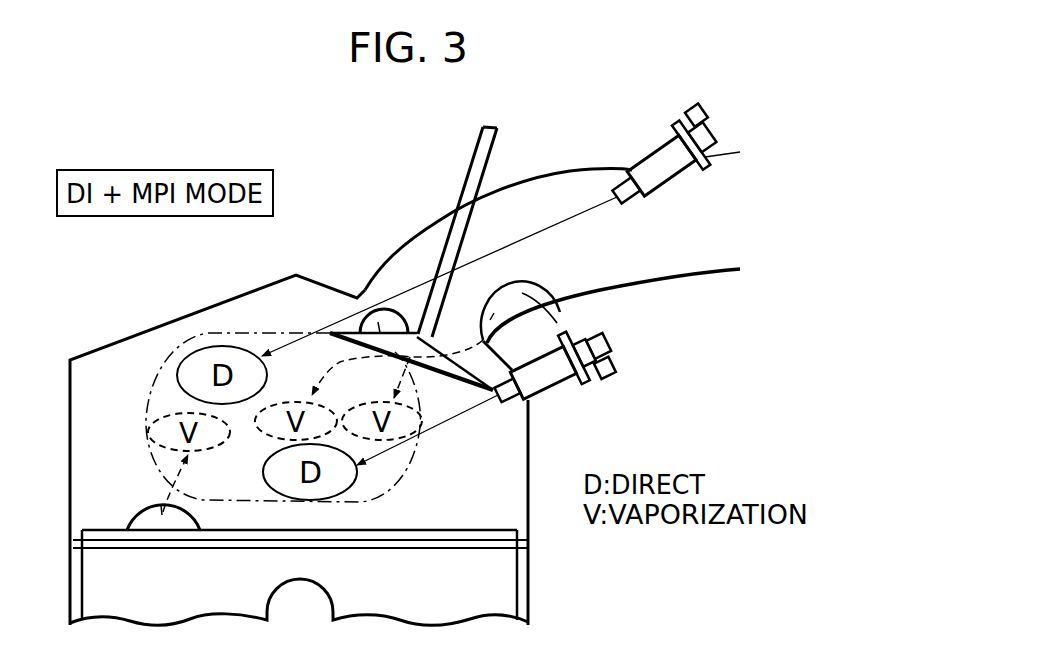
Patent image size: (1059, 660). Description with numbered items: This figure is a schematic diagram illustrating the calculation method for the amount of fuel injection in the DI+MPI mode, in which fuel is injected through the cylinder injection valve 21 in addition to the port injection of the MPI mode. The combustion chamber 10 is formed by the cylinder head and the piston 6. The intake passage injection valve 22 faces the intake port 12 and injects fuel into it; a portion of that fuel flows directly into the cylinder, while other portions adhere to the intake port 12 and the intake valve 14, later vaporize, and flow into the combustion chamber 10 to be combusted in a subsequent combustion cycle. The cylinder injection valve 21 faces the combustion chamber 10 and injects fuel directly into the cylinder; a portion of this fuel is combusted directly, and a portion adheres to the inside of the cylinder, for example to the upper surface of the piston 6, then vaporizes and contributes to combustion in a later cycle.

The piston 6 is at (105, 582).
The combustion chamber 10 is at (110, 442).
The intake port 12 is at (567, 297).
The intake valve 14 is at (392, 330).
The cylinder injection valve 21 is at (560, 383).
The intake passage injection valve 22 is at (650, 156).